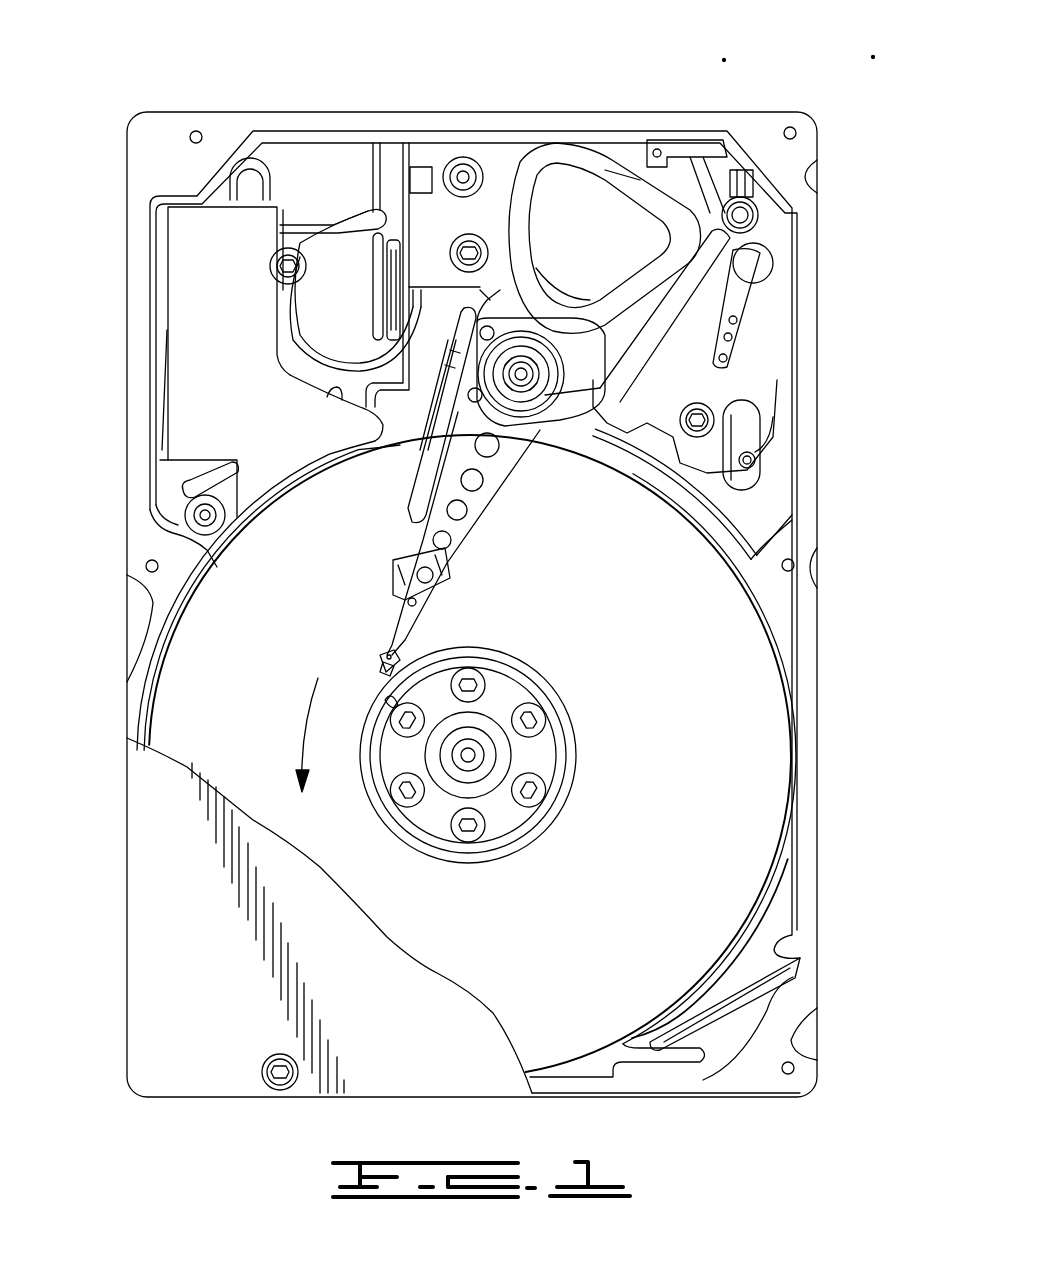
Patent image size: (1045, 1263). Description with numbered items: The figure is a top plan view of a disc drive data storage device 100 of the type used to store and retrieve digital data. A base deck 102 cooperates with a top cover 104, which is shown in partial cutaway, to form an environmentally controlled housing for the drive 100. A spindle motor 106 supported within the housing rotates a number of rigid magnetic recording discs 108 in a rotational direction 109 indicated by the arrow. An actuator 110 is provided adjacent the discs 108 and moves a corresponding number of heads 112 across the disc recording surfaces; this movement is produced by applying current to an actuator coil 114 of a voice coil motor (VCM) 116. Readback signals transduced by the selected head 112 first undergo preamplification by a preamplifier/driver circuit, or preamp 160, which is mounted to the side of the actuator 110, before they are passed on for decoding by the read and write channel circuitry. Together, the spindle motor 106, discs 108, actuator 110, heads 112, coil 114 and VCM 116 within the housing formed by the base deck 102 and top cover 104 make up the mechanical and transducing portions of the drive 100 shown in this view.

The disc drive data storage device 100 is at (197, 80).
The base deck 102 is at (300, 367).
The top cover 104 is at (152, 790).
The spindle motor 106 is at (491, 729).
The rigid magnetic recording discs 108 is at (735, 745).
The rotational direction 109 is at (303, 712).
The actuator 110 is at (528, 440).
The heads 112 is at (380, 658).
The actuator coil 114 is at (580, 160).
The voice coil motor (VCM) 116 is at (630, 153).
The preamplifier/driver circuit (preamp) 160 is at (433, 437).